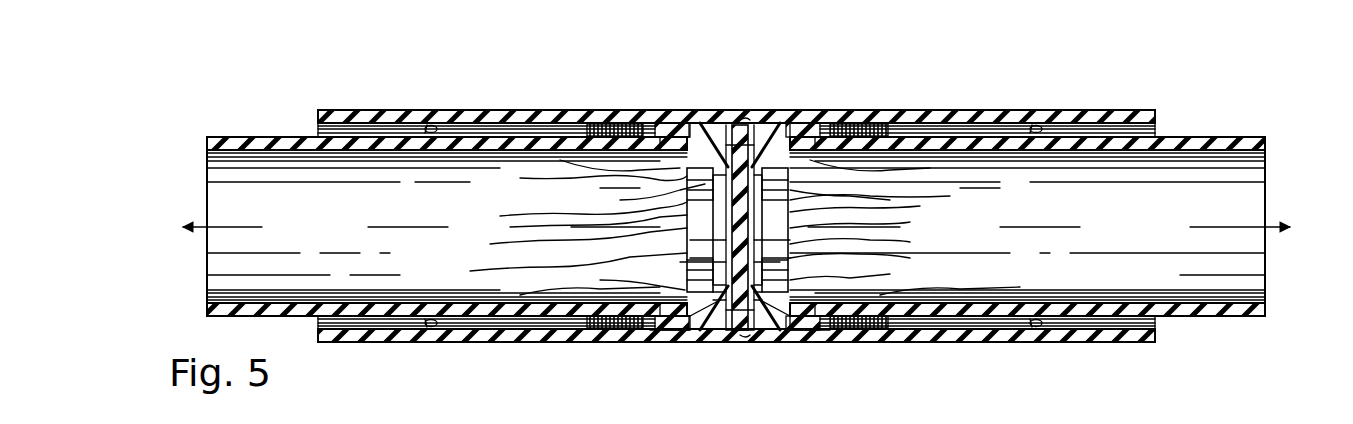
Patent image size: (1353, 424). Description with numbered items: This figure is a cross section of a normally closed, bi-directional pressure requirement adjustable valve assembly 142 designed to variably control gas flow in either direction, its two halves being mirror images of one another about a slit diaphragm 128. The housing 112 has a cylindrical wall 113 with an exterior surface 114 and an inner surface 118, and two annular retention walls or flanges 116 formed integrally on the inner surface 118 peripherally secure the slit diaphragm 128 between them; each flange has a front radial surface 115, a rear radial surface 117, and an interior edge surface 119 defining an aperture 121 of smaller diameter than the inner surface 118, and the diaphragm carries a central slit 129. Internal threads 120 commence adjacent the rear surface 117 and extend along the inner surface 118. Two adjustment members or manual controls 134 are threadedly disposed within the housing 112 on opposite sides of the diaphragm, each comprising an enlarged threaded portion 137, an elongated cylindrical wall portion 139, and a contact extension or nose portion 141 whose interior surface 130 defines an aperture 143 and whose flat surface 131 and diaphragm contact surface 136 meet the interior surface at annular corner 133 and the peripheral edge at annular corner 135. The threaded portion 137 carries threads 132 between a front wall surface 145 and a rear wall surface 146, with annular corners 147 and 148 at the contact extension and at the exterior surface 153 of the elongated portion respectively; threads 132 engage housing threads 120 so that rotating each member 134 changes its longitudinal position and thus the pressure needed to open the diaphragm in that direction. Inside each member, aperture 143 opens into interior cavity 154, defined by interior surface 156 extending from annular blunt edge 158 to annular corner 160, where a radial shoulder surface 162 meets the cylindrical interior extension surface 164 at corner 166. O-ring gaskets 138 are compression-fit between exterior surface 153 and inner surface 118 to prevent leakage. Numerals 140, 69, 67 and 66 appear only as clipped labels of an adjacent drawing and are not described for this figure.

The hollow cylindrical housing 112 is at (353, 114).
The cylindrical wall 113 is at (366, 116).
The exterior surface 114 is at (392, 346).
The front radial surface 115 is at (742, 122).
The annular retention wall or flange 116 is at (716, 340).
The rear radial surface 117 is at (690, 340).
The inner surface 118 is at (326, 117).
The interior edge surface 119 is at (680, 262).
The internal threads 120 is at (620, 110).
The aperture or orifice 121 is at (722, 340).
The slit diaphragm 128 is at (734, 340).
The slit 129 is at (690, 239).
The orifice-forming interior surface 130 is at (560, 220).
The flat surface 131 is at (600, 254).
The threads 132 is at (686, 124).
The annular corner 133 is at (560, 248).
The adjustment member or manual control 134 is at (260, 136).
The annular corner 135 is at (540, 275).
The diaphragm contact surface 136 is at (703, 170).
The enlarged threaded portion 137 is at (648, 122).
The O-ring seal or gasket 138 is at (424, 118).
The elongated cylindrical wall portion 139 is at (431, 344).
The contact extension, nose portion or abutment wall 141 is at (813, 112).
The bi-directional pressure requirement adjustable valve assembly 142 is at (548, 82).
The aperture or orifice 143 is at (580, 231).
The front wall surface 145 is at (701, 120).
The rear wall surface 146 is at (628, 340).
The annular corner 147 is at (748, 120).
The annular corner 148 is at (606, 340).
The exterior surface 153 is at (224, 134).
The interior cavity 154 is at (736, 244).
The interior surface 156 is at (335, 344).
The annular blunt edge 158 is at (203, 315).
The annular corner 160 is at (665, 122).
The annular shoulder surface 162 is at (554, 122).
The cylindrical interior extension surface 164 is at (640, 340).
The corner 166 is at (590, 183).
The adjacent figure element 140 is at (365, 418).
The adjacent figure element 69 is at (437, 418).
The adjacent figure element 67 is at (482, 423).
The adjacent figure element 66 is at (787, 418).